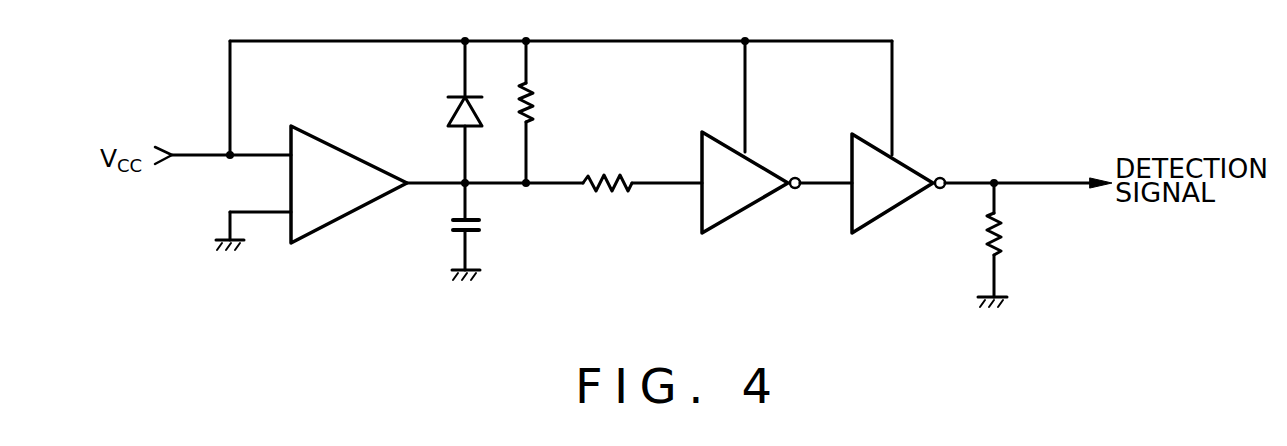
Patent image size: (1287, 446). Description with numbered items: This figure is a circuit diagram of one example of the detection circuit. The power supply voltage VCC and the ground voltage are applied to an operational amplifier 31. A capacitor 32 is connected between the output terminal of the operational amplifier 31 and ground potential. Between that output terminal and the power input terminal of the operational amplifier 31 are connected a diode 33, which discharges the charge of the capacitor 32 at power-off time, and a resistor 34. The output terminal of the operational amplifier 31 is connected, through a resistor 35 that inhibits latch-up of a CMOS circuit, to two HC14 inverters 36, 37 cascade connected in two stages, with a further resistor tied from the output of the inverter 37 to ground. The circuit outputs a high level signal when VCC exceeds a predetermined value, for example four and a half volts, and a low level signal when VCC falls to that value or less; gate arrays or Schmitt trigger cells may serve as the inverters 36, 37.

The operational amplifier 31 is at (349, 207).
The capacitor 32 is at (482, 222).
The diode 33 is at (449, 103).
The resistor 34 is at (535, 95).
The resistor 35 is at (608, 191).
The inverter 36 is at (756, 208).
The inverter 37 is at (898, 208).